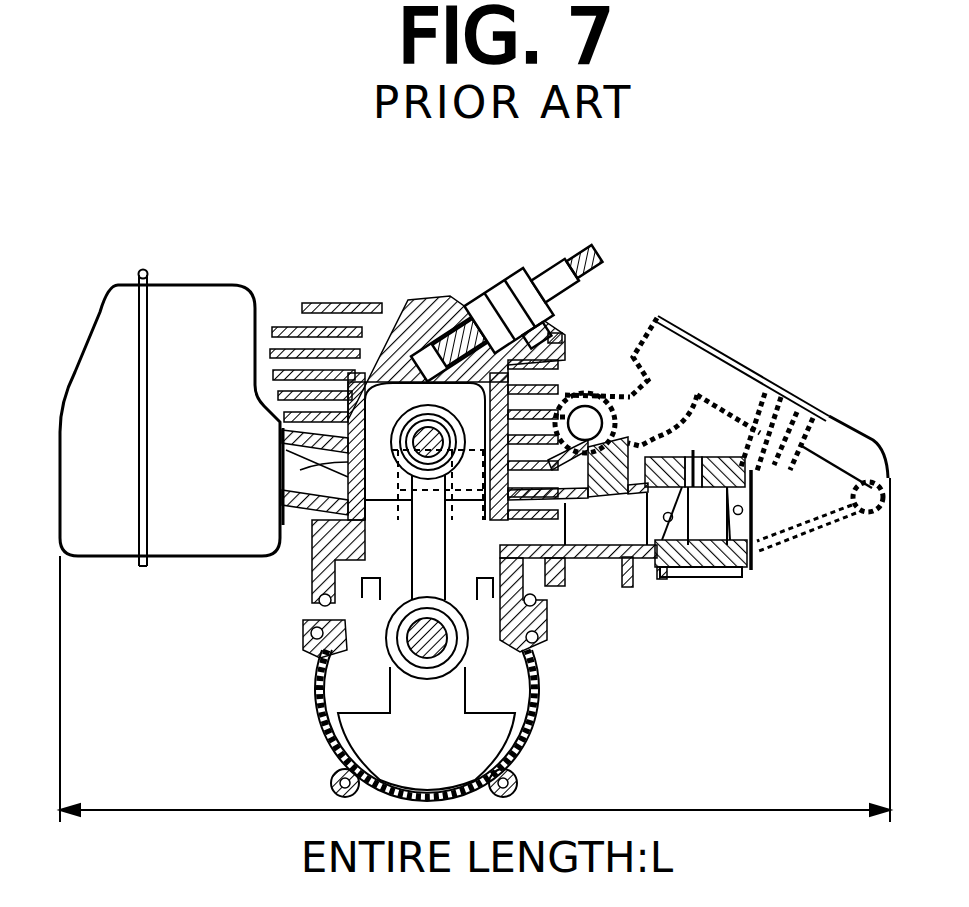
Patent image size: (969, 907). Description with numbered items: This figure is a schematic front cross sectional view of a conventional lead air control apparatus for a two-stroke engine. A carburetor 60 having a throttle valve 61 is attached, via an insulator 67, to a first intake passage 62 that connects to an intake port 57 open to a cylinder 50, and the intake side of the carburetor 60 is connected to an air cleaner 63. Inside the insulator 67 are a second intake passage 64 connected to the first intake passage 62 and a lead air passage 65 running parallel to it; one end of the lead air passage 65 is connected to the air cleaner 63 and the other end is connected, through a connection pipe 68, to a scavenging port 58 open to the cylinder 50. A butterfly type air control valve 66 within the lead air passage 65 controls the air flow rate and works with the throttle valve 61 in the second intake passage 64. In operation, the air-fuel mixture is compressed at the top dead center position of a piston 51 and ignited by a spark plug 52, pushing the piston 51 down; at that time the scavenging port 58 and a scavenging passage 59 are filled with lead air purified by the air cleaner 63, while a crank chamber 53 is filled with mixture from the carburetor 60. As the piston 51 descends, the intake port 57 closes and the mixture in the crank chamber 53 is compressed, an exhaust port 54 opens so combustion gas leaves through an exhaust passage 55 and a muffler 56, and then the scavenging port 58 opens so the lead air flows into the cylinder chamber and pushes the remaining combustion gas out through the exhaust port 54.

The cylinder 50 is at (348, 303).
The piston 51 is at (370, 337).
The spark plug 52 is at (512, 276).
The crank chamber 53 is at (502, 693).
The exhaust port 54 is at (355, 468).
The exhaust passage 55 is at (283, 467).
The muffler 56 is at (97, 552).
The intake port 57 is at (550, 530).
The scavenging port 58 is at (318, 552).
The scavenging passage 59 is at (313, 650).
The carburetor 60 is at (755, 560).
The throttle valve 61 is at (703, 580).
The first intake passage 62 is at (552, 558).
The air cleaner 63 is at (747, 397).
The second intake passage 64 is at (640, 557).
The lead air passage 65 is at (652, 420).
The air control valve 66 is at (600, 390).
The insulator 67 is at (637, 533).
The connection pipe 68 is at (565, 383).